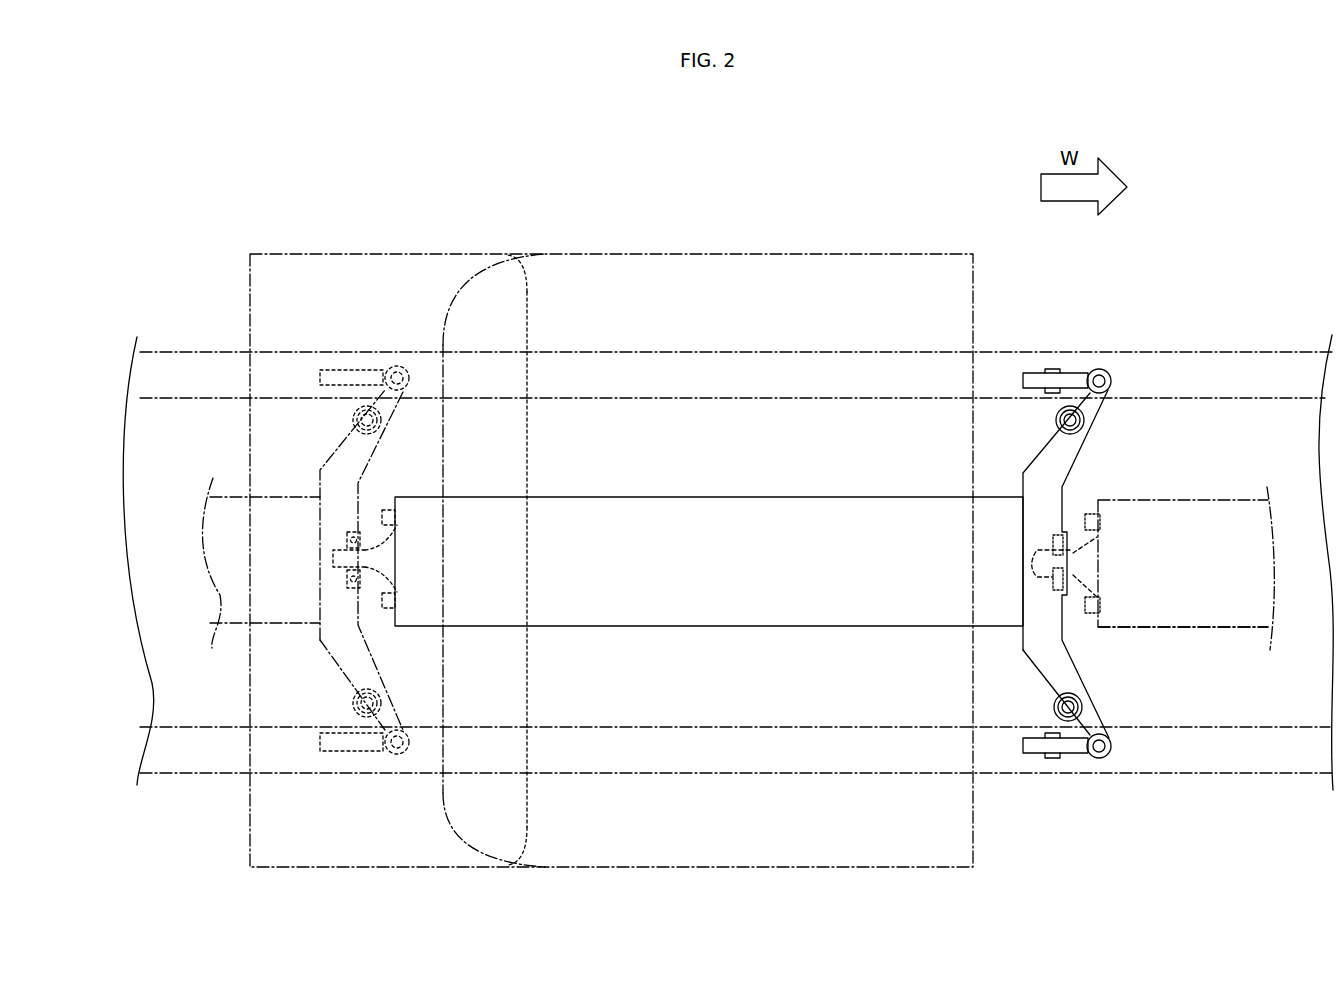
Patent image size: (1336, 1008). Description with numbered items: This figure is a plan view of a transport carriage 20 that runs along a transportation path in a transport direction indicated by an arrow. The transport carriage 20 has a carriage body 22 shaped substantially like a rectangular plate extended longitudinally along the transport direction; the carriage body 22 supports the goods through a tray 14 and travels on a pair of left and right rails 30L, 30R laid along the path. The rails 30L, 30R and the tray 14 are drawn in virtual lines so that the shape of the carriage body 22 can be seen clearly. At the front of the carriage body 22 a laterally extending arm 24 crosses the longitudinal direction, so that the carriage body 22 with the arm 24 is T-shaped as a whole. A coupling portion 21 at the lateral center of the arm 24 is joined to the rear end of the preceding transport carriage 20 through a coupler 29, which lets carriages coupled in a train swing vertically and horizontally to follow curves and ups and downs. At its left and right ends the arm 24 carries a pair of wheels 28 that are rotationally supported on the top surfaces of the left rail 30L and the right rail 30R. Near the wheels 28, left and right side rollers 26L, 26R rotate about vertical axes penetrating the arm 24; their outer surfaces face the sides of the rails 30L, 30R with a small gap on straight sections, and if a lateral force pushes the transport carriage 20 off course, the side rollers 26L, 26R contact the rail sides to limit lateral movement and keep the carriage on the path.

The tray 14 is at (739, 253).
The transport carriage 20 is at (989, 437).
The coupling portion 21 is at (1045, 580).
The carriage body 22 is at (668, 510).
The arm 24 is at (1047, 480).
The left side roller 26L is at (1085, 418).
The right side roller 26R is at (1085, 710).
The wheel 28 is at (1032, 372).
The coupler 29 is at (362, 560).
The left rail 30L is at (1200, 352).
The right rail 30R is at (1178, 775).